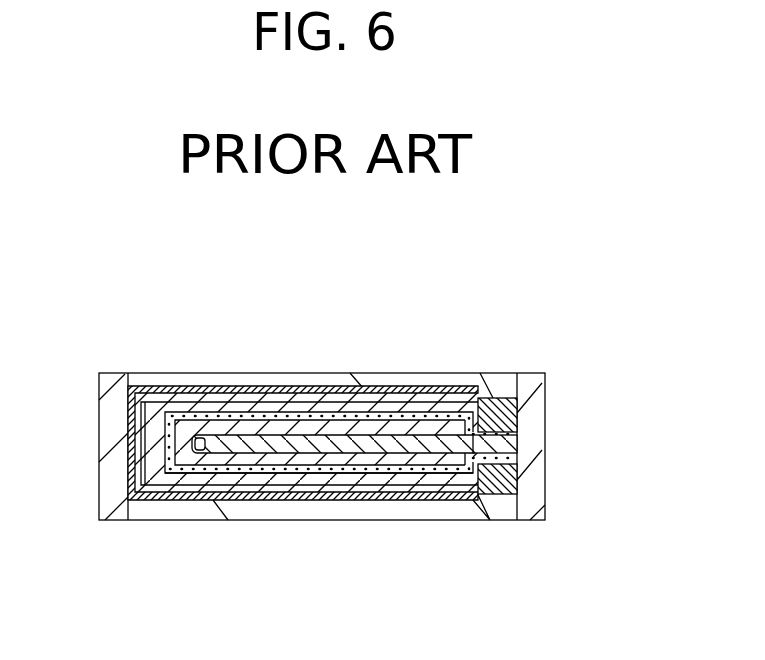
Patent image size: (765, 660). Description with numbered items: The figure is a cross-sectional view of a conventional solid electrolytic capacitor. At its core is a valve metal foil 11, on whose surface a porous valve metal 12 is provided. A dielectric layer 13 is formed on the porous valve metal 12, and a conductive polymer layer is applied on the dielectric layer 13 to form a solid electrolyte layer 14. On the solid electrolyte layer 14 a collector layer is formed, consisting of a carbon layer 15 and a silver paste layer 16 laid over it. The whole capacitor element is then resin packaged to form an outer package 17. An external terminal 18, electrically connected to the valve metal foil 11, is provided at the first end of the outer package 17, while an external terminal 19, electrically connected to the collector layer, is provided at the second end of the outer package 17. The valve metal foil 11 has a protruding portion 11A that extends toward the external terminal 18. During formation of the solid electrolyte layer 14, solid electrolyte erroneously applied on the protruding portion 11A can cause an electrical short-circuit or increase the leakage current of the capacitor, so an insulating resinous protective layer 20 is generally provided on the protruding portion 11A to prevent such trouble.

The valve metal foil 11 is at (232, 437).
The protruding portion 11A is at (505, 445).
The porous valve metal 12 is at (325, 458).
The dielectric layer 13 is at (421, 467).
The solid electrolyte layer 14 is at (457, 385).
The carbon layer 15 is at (395, 398).
The silver paste layer 16 is at (284, 390).
The outer package 17 is at (370, 402).
The external terminal 18 is at (530, 385).
The external terminal 19 is at (105, 433).
The insulating resinous protective layer 20 is at (517, 479).